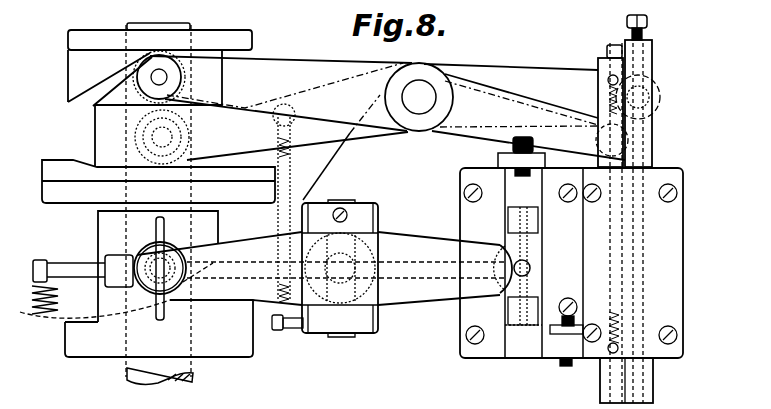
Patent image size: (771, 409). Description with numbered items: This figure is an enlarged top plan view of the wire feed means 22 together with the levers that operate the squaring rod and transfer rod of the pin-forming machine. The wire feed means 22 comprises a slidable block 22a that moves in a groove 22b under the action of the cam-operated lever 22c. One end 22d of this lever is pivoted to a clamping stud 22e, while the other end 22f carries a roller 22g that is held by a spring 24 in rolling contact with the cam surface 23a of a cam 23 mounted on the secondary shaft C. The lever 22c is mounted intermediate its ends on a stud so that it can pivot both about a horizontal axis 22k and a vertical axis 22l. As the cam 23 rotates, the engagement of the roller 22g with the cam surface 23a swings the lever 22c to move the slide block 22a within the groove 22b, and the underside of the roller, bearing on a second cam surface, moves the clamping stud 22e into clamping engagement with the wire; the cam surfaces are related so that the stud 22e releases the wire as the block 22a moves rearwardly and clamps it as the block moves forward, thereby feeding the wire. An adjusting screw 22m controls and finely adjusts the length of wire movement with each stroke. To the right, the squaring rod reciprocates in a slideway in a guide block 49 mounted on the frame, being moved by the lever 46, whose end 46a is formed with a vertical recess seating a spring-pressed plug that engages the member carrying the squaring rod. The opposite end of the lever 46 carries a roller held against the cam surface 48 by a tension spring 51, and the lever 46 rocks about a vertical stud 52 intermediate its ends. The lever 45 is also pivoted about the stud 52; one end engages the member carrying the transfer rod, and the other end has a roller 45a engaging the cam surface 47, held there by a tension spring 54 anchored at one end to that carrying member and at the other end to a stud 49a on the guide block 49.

The pivoted lever 45 is at (374, 93).
The roller 45a is at (150, 90).
The cam 47 is at (92, 100).
The cam 48 is at (97, 167).
The tension spring 51 is at (284, 160).
The vertical stud 52 is at (412, 96).
The pivoted lever 46 is at (372, 135).
The lever end 46a is at (660, 107).
The tension spring 54 is at (612, 97).
The wire feed means 22 is at (341, 268).
The slidable block 22a is at (530, 325).
The groove 22b is at (503, 175).
The cam-operated lever 22c is at (344, 262).
The lever end 22d is at (530, 266).
The clamping stud 22e is at (533, 272).
The lever end 22f is at (134, 253).
The roller 22g is at (143, 246).
The horizontal axis 22k is at (343, 333).
The vertical axis 22l is at (368, 271).
The adjusting screw 22m is at (503, 173).
The cam 23 is at (159, 328).
The cam surface 23a is at (97, 323).
The spring 24 is at (66, 286).
The guide block 49 is at (571, 263).
The stud 49a is at (620, 352).
The secondary shaft C is at (128, 378).